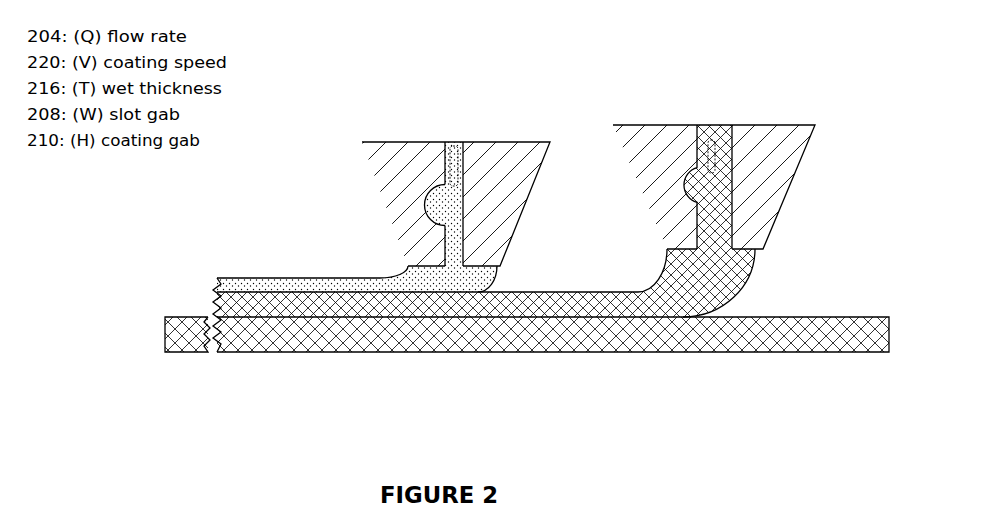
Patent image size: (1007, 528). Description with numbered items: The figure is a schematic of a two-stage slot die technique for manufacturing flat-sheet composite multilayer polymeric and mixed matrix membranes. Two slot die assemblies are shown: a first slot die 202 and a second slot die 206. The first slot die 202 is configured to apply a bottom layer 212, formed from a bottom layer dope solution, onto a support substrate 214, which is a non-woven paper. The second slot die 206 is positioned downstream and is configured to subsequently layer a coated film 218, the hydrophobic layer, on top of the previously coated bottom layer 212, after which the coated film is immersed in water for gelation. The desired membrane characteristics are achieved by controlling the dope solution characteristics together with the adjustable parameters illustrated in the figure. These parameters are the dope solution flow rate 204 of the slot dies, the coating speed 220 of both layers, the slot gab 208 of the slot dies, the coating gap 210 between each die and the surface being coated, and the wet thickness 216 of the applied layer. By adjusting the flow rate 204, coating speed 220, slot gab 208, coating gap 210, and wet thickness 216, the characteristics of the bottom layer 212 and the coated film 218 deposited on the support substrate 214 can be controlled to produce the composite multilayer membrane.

The slot die 1 202 is at (676, 120).
The dope solution flow rate 204 is at (439, 205).
The slot die 2 206 is at (410, 137).
The slot gab 208 is at (487, 241).
The coating gap 210 is at (500, 266).
The bottom layer 212 is at (488, 306).
The support substrate 214 is at (364, 332).
The wet thickness 216 is at (217, 292).
The coated film 218 is at (340, 272).
The coating speed 220 is at (252, 261).